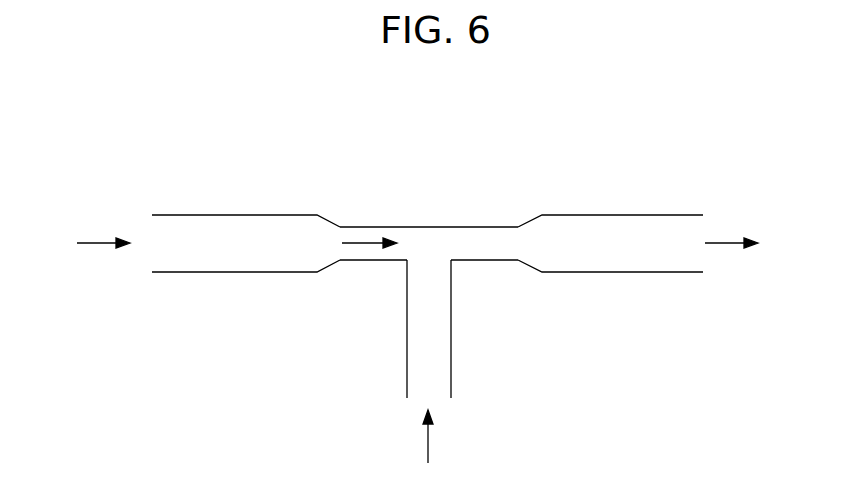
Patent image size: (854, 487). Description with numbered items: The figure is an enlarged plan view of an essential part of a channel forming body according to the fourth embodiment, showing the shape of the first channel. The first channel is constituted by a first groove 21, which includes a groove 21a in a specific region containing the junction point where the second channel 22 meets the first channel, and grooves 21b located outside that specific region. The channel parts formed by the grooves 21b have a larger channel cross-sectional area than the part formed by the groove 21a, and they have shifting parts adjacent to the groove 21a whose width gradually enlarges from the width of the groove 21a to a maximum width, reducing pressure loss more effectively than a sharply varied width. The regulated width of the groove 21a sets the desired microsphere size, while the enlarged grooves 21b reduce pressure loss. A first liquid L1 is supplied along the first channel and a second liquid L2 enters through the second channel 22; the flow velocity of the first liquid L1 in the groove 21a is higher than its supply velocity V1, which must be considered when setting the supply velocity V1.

The first groove 21 is at (630, 147).
The groove in the specific region 21a is at (460, 235).
The grooves out of the specific region 21b is at (238, 232).
The second channel 22 is at (438, 335).
The first liquid L1 is at (93, 242).
The second liquid L2 is at (428, 443).
The supply velocity V1 is at (362, 243).